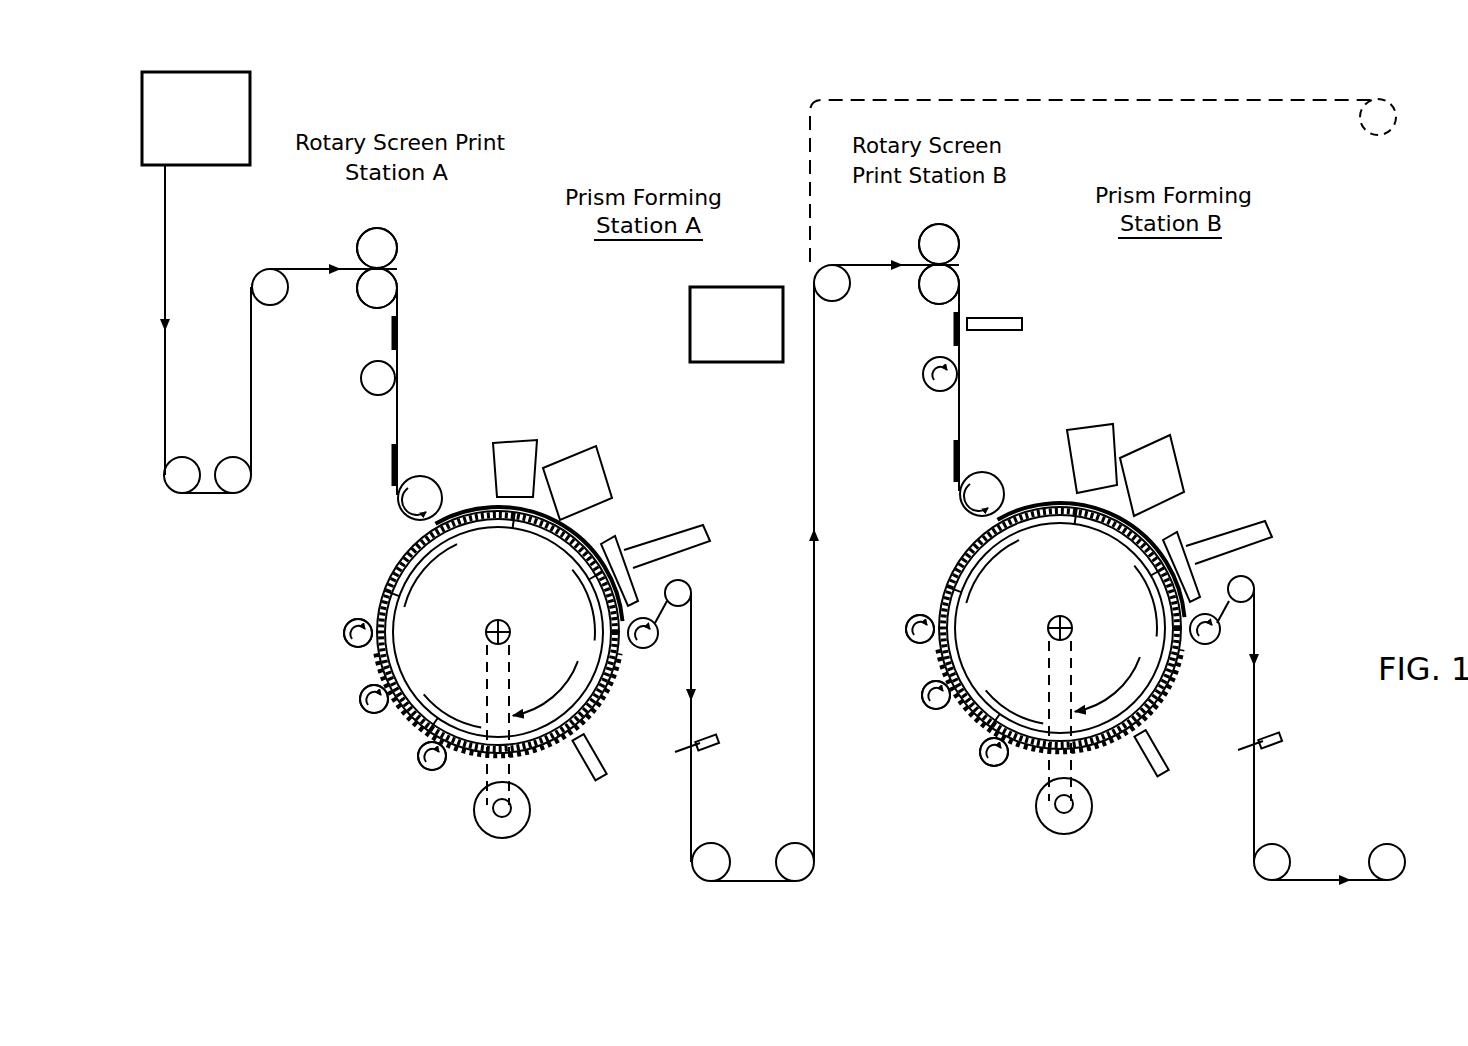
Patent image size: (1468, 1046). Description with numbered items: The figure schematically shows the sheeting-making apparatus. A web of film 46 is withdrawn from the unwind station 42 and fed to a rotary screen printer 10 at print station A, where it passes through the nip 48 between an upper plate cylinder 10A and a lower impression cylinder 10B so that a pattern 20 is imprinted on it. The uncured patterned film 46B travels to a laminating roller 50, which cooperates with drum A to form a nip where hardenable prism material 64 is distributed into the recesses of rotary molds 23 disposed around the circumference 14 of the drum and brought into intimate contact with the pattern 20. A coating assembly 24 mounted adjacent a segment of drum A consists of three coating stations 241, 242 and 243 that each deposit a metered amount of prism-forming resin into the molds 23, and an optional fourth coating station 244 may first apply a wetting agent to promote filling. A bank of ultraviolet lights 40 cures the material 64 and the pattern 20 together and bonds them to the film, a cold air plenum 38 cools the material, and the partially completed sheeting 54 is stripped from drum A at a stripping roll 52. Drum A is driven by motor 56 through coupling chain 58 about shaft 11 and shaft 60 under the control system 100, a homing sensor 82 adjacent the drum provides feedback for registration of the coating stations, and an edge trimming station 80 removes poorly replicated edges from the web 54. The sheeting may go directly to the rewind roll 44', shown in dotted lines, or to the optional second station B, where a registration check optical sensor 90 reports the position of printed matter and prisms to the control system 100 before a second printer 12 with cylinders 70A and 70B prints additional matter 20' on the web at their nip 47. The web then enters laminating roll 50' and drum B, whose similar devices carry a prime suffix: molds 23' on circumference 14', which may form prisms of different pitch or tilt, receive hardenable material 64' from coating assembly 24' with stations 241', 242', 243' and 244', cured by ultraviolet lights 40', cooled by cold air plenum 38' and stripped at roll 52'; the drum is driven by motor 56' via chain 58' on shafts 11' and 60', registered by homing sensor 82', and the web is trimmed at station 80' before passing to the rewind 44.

The unwind station 42 is at (252, 90).
The web of film 46 is at (306, 266).
The rotary screen printer 10 is at (363, 235).
The upper plate cylinder 10A is at (383, 245).
The lower impression cylinder 10B is at (360, 289).
The nip 48 is at (394, 266).
The uncured patterned film 46B is at (399, 362).
The pattern 20 is at (360, 401).
The fourth coating station 244 is at (340, 389).
The laminating roller 50 is at (464, 448).
The circumference of drum A 14 is at (482, 631).
The cube-corner prisms 64 is at (473, 632).
The rotary molds 23 is at (493, 621).
The shaft 11 is at (474, 631).
The coupling chain 58 is at (522, 725).
The motor 56 is at (498, 828).
The shaft 60 is at (473, 823).
The coating assembly 24 is at (341, 697).
The coating station 243 is at (322, 637).
The coating station 242 is at (340, 701).
The coating station 241 is at (396, 759).
The bank of ultraviolet lights 40 is at (591, 463).
The cold air plenum 38 is at (686, 537).
The stripping roll 52 is at (643, 668).
The printed formed sheeting 54 is at (693, 656).
The edge trimming station 80 is at (722, 773).
The homing sensor 82 is at (603, 800).
The control system 100 is at (688, 331).
The rewind roll 44' is at (1323, 119).
The printer 12 is at (922, 234).
The cylinder 70A is at (940, 234).
The cylinder 70B is at (956, 283).
The web nip 47 is at (956, 262).
The additional printed matter 20' is at (924, 397).
The registration check optical sensor 90 is at (1025, 320).
The fourth coating station 244' is at (906, 388).
The laminating roll 50' is at (1025, 452).
The circumference of drum B 14' is at (1043, 627).
The hardenable prism material 64' is at (1031, 628).
The molds 23' is at (1055, 617).
The shaft 11' is at (1037, 626).
The coupling chain 58' is at (1085, 721).
The motor 56' is at (1055, 824).
The shaft 60' is at (1029, 820).
The coating assembly 24' is at (914, 693).
The coating station 243' is at (887, 637).
The coating station 242' is at (912, 710).
The coating station 241' is at (972, 771).
The bank of ultraviolet lights 40' is at (1161, 459).
The cold air plenum 38' is at (1254, 537).
The stripping roll 52' is at (1204, 664).
The homing sensor 82' is at (1168, 796).
The rewind roller 44 is at (1318, 744).
The edge trimming station 80' is at (1289, 768).